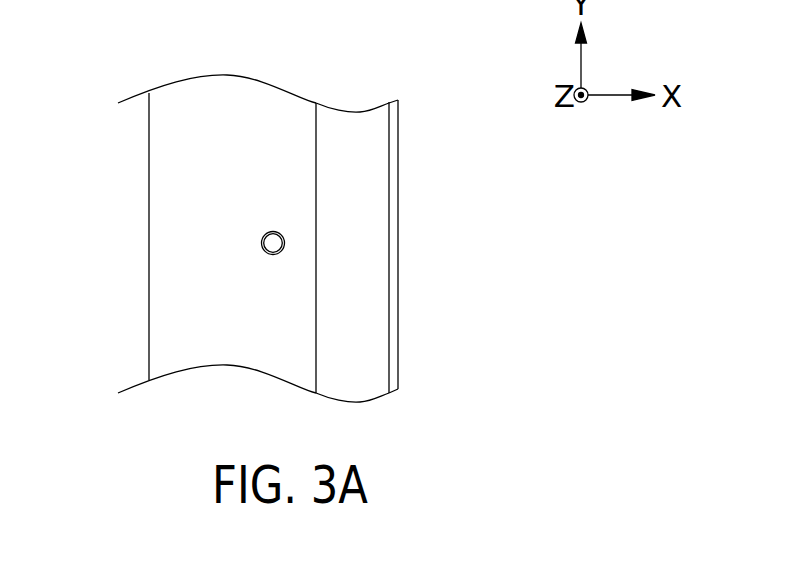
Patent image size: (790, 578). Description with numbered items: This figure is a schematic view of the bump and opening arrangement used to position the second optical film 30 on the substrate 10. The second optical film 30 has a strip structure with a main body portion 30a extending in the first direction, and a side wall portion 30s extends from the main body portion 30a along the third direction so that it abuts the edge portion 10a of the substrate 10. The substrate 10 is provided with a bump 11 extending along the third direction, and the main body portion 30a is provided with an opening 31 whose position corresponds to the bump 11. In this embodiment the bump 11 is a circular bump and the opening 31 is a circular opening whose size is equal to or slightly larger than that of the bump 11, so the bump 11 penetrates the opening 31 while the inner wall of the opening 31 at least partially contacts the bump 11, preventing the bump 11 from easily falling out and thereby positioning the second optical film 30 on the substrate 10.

The substrate 10 is at (122, 142).
The second optical film 30 is at (352, 252).
The side wall portion 30s is at (358, 138).
The edge portion 10a is at (398, 173).
The opening 31 is at (282, 234).
The bump 11 is at (273, 243).
The main body portion 30a is at (275, 317).